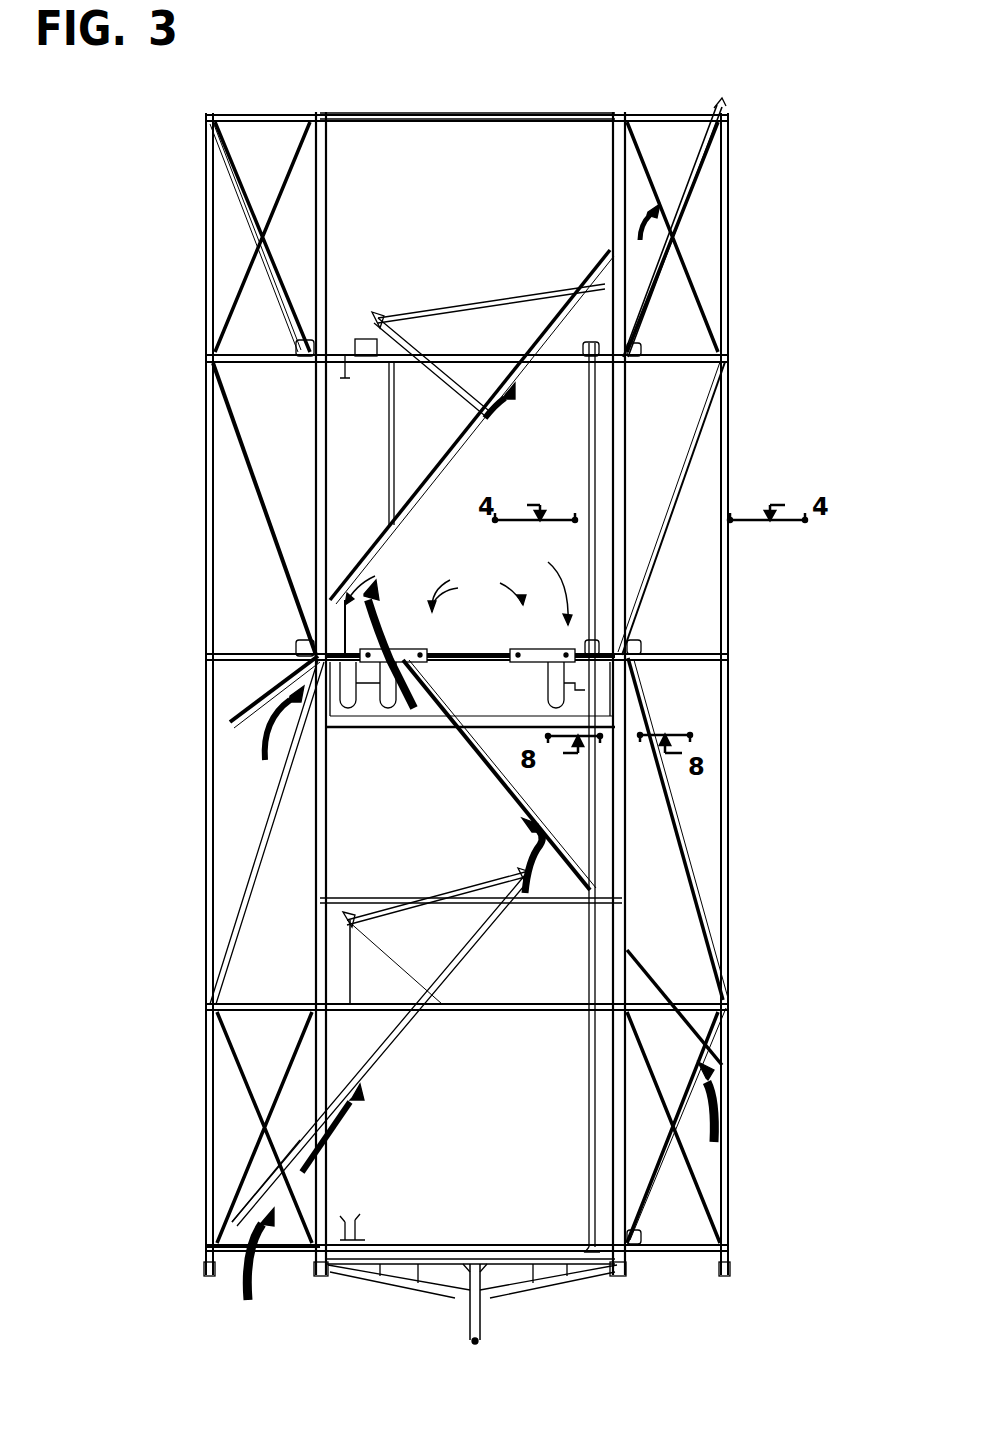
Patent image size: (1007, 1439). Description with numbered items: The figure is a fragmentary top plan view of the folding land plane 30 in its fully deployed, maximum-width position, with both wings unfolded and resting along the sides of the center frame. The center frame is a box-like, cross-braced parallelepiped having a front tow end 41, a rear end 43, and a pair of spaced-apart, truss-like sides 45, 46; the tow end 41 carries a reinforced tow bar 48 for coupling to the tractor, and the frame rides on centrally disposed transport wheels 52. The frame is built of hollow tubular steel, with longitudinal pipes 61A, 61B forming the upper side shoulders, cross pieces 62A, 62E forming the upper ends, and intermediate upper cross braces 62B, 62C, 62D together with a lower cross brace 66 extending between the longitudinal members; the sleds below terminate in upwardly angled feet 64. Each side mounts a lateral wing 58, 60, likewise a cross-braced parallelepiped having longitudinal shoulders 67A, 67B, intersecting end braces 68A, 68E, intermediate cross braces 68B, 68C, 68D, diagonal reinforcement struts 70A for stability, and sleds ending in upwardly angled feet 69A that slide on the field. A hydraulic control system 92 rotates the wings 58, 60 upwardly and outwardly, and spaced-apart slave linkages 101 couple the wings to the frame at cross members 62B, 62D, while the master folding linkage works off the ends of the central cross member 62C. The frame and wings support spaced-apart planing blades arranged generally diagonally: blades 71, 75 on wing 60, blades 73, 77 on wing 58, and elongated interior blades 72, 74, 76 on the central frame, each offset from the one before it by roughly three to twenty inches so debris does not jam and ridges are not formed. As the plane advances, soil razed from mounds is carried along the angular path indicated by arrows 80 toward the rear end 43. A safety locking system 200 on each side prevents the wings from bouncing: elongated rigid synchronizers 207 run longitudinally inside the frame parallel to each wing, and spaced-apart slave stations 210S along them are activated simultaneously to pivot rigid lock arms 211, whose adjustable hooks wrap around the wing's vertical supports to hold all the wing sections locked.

The folding land plane 30 is at (150, 712).
The front tow end 41 is at (512, 1300).
The rear end 43 is at (505, 92).
The truss-like frame side 45 is at (605, 210).
The truss-like frame side 46 is at (335, 230).
The tow bar 48 is at (470, 1340).
The transport wheels 52 is at (565, 688).
The lateral wing 58 is at (770, 940).
The lateral wing 60 is at (205, 950).
The longitudinal pipe 61A is at (312, 440).
The longitudinal pipe 61B is at (615, 412).
The cross piece 62A is at (612, 1270).
The intermediate upper cross brace 62B is at (555, 1012).
The central cross member 62C is at (490, 648).
The intermediate upper cross brace 62D is at (470, 380).
The cross piece 62E is at (440, 112).
The upwardly angled feet 64 is at (325, 1280).
The lower cross brace 66 is at (445, 898).
The longitudinal wing shoulder 67A is at (205, 168).
The longitudinal wing shoulder 67B is at (327, 190).
The intersecting end brace 68A is at (304, 1255).
The intermediate wing cross brace 68B is at (305, 1012).
The intermediate wing cross brace 68C is at (292, 648).
The intermediate wing cross brace 68D is at (212, 362).
The intersecting end brace 68E is at (298, 112).
The upwardly angled wing feet 69A is at (208, 1272).
The reinforcement strut 70A is at (728, 448).
The planing blade 71 is at (243, 1215).
The interior planing blade 72 is at (380, 1040).
The planing blade 73 is at (652, 975).
The interior planing blade 74 is at (512, 778).
The planing blade 75 is at (260, 665).
The interior planing blade 76 is at (478, 430).
The planing blade 77 is at (680, 138).
The soil path arrows 80 is at (642, 240).
The hydraulic control system 92 is at (479, 584).
The slave linkage 101 is at (595, 285).
The safety locking system 200 is at (458, 599).
The synchronizer 207 is at (358, 342).
The slave locking station 210S is at (565, 345).
The lock arm 211 is at (332, 340).